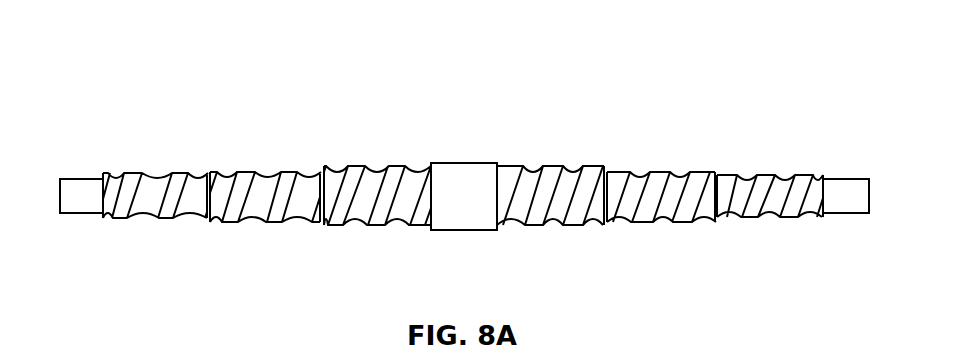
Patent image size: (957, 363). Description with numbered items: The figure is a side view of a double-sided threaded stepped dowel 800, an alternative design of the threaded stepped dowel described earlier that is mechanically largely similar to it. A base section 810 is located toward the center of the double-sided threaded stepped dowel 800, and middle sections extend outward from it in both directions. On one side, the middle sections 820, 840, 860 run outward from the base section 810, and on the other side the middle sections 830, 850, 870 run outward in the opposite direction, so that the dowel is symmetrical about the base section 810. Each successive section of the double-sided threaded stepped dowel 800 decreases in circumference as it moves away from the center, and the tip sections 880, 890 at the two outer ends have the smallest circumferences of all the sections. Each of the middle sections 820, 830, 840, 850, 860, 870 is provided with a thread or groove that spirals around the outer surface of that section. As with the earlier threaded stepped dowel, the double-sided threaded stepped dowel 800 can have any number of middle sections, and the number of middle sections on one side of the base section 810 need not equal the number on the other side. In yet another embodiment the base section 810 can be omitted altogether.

The double-sided threaded stepped dowel 800 is at (192, 52).
The base section 810 is at (463, 180).
The middle section 820 is at (420, 213).
The middle section 830 is at (575, 212).
The middle section 840 is at (268, 193).
The middle section 850 is at (680, 193).
The middle section 860 is at (187, 200).
The middle section 870 is at (812, 202).
The tip section 880 is at (83, 193).
The tip section 890 is at (847, 193).